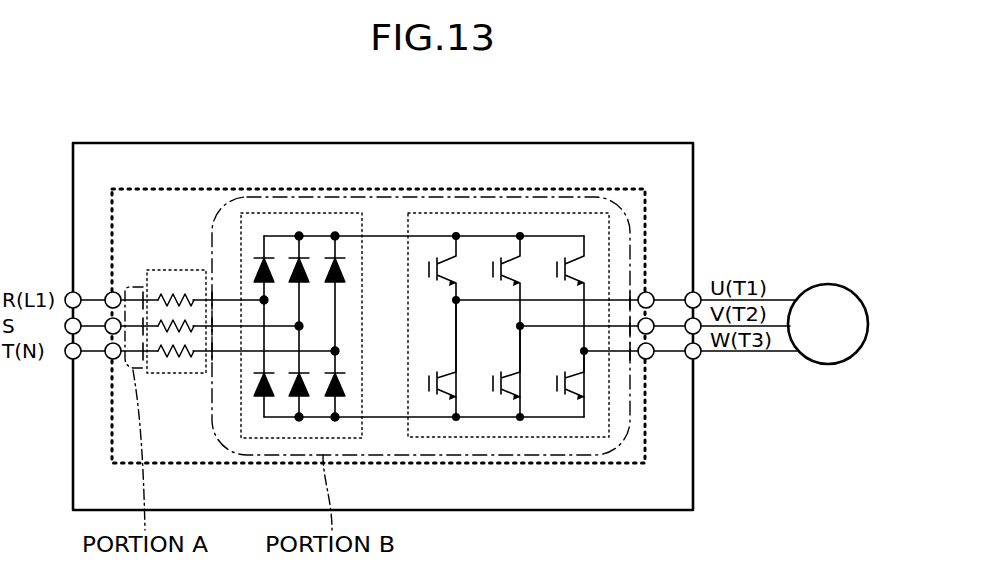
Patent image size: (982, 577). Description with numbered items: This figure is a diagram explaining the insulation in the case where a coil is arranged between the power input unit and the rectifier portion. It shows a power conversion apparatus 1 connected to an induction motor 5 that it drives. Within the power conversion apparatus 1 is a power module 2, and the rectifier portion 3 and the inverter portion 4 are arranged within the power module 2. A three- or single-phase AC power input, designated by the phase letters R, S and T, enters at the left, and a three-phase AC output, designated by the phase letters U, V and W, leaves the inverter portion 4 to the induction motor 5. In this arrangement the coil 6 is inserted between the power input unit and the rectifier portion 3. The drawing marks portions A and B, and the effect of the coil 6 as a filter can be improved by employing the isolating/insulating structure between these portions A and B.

The power conversion apparatus 1 is at (262, 143).
The power module 2 is at (298, 189).
The rectifier portion 3 is at (340, 213).
The inverter portion 4 is at (434, 213).
The induction motor 5 is at (822, 284).
The coil 6 is at (176, 270).